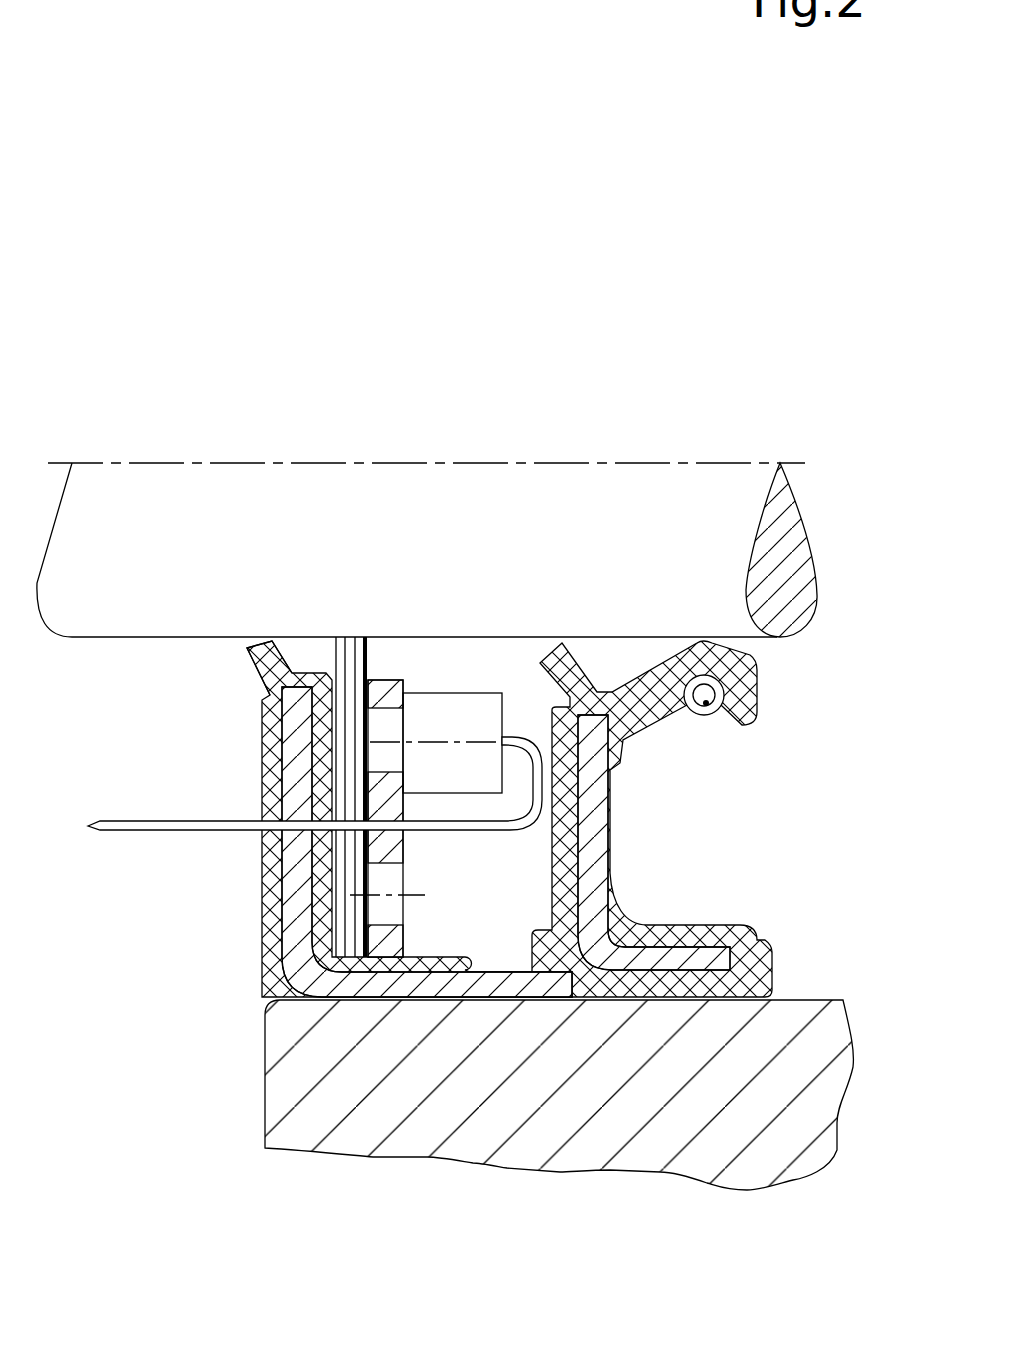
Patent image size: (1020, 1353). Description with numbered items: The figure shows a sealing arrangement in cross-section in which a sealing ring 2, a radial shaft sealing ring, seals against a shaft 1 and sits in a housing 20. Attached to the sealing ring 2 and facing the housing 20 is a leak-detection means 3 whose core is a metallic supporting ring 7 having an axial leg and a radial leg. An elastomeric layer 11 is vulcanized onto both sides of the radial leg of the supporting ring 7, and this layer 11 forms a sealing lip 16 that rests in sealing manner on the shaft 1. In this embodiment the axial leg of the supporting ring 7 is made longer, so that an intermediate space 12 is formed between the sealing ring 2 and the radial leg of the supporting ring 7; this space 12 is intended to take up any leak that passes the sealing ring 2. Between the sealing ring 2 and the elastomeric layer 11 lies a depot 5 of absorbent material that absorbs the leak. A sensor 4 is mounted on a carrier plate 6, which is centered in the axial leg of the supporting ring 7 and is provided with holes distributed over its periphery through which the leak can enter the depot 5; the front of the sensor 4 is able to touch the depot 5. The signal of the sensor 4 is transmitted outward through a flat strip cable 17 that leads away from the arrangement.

The shaft 1 is at (503, 503).
The sealing ring 2 is at (642, 861).
The leak-detection means 3 is at (332, 981).
The sensor 4 is at (460, 717).
The depot 5 is at (350, 665).
The carrier plate 6 is at (386, 685).
The supporting ring 7 is at (344, 978).
The elastomeric layer 11 is at (265, 748).
The intermediate space 12 is at (496, 945).
The sealing lip 16 is at (253, 660).
The flat strip cable 17 is at (150, 832).
The housing 20 is at (703, 1112).